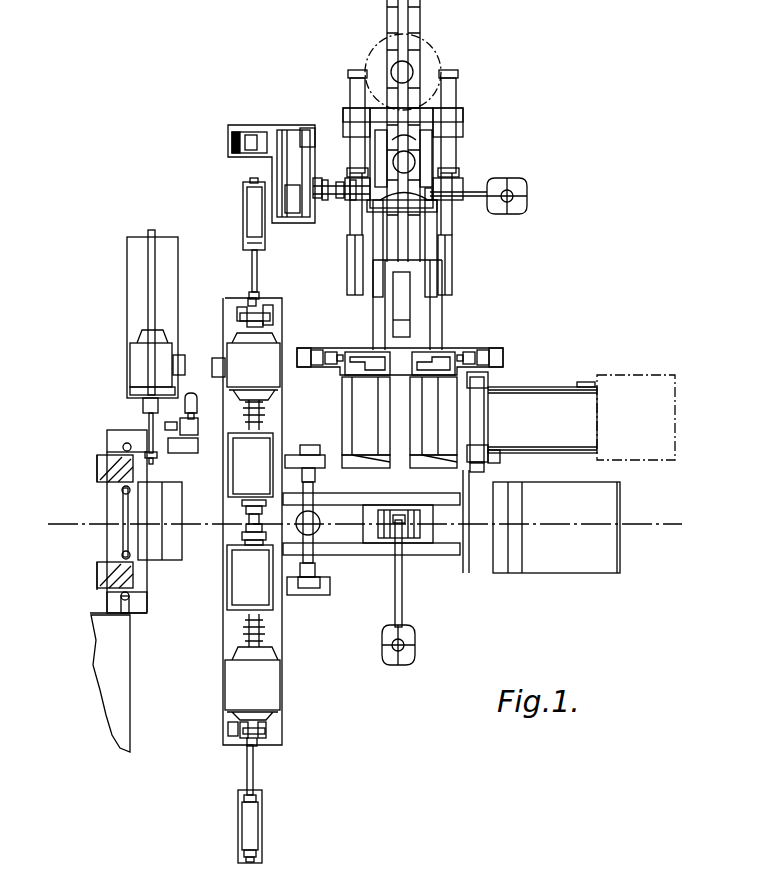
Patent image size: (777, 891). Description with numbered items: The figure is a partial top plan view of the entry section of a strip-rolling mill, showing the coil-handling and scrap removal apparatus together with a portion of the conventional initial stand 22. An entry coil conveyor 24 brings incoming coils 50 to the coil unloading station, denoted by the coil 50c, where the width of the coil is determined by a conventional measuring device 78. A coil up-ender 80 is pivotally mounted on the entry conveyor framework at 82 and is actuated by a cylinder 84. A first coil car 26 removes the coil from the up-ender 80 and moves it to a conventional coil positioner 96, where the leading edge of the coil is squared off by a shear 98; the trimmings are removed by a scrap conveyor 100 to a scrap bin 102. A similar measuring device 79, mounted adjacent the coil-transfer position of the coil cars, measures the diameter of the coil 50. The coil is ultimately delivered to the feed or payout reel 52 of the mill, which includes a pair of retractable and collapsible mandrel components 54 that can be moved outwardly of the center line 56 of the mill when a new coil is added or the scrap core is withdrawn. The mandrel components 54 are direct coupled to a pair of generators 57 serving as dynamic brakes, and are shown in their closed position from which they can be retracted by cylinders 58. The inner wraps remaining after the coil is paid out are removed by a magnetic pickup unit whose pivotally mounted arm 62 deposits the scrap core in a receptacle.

The initial stand 22 is at (100, 590).
The entry coil conveyor 24 is at (420, 18).
The first coil car 26 is at (402, 309).
The coil 50 is at (437, 50).
The coil at unloading station 50c is at (447, 163).
The feed reel 52 is at (263, 453).
The mandrel components 54 is at (243, 523).
The center line 56 is at (662, 524).
The generators 57 is at (270, 362).
The cylinders 58 is at (243, 200).
The pivotally mounted arm 62 is at (318, 568).
The measuring device 78 is at (508, 182).
The measuring device 79 is at (380, 650).
The coil up-ender 80 is at (447, 273).
The pivot mounting 82 is at (452, 247).
The cylinder 84 is at (355, 90).
The coil positioner 96 is at (417, 440).
The shear 98 is at (475, 398).
The scrap conveyor 100 is at (550, 405).
The scrap bin 102 is at (640, 375).